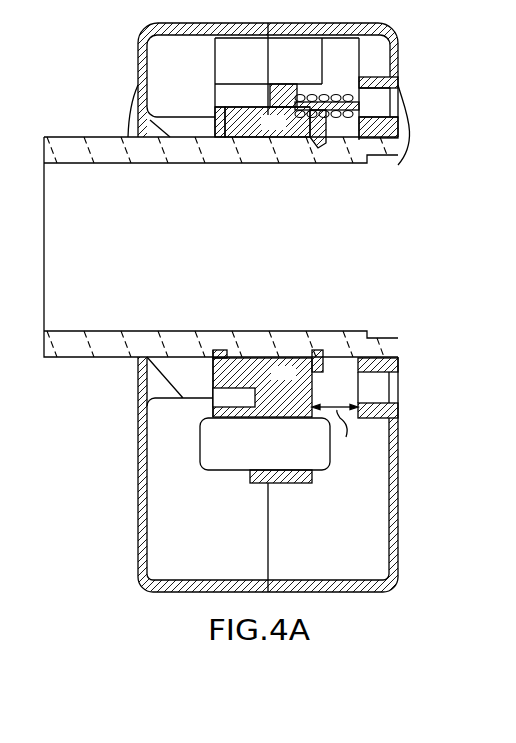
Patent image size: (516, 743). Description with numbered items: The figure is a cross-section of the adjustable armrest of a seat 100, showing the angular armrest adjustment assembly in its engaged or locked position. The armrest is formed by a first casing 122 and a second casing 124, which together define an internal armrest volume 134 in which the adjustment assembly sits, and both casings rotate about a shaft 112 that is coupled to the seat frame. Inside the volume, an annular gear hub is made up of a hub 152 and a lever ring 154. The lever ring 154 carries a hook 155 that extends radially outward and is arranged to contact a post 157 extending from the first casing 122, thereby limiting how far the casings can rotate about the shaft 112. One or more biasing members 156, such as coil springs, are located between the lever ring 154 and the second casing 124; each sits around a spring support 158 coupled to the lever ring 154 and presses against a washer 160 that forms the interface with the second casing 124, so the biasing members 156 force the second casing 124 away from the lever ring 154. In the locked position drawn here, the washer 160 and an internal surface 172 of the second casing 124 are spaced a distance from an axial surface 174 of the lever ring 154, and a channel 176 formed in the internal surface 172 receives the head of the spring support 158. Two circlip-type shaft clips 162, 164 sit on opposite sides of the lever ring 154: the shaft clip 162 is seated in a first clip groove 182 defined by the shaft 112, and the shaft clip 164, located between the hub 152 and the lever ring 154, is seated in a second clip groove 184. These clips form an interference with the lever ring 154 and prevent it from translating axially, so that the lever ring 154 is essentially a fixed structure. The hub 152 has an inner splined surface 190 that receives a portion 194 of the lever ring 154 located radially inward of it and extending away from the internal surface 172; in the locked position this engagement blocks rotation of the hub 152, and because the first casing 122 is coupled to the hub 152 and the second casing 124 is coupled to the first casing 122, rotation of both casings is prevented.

The seat 100 is at (84, 68).
The shaft 112 is at (136, 258).
The first casing 122 is at (140, 508).
The second casing 124 is at (400, 511).
The internal armrest volume 134 is at (218, 58).
The hub 152 is at (222, 95).
The lever ring 154 is at (262, 262).
The hook 155 is at (305, 484).
The biasing member 156 is at (341, 93).
The post 157 is at (218, 467).
The spring support 158 is at (296, 95).
The washer 160 is at (360, 86).
The shaft clip 162 is at (318, 149).
The shaft clip 164 is at (226, 139).
The internal surface 172 is at (346, 145).
The axial surface 174 is at (319, 369).
The channel 176 is at (390, 123).
The first clip groove 182 is at (306, 156).
The second clip groove 184 is at (211, 157).
The inner splined surface 190 is at (250, 152).
The portion 194 is at (257, 101).